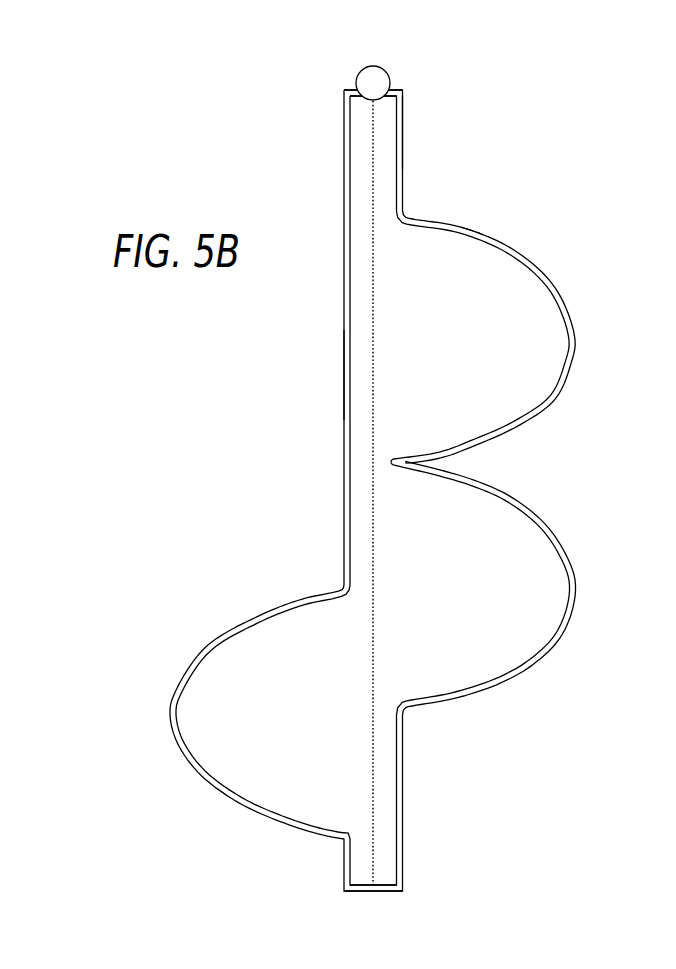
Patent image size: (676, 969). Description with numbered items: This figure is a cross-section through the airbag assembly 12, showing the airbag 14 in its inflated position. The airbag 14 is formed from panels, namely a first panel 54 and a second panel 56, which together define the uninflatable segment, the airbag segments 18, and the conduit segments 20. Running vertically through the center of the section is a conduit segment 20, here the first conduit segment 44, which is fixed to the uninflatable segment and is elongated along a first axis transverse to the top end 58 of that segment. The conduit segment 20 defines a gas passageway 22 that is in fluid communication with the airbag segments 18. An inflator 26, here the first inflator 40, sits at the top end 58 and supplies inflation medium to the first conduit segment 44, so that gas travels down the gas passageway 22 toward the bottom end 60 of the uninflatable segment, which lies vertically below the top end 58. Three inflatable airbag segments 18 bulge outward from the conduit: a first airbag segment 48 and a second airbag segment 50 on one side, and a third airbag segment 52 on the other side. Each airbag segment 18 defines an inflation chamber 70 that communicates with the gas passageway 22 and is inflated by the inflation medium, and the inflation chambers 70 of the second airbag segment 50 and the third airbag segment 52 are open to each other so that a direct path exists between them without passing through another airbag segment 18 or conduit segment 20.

The airbag assembly 12 is at (377, 462).
The airbag 14 is at (343, 188).
The airbag segment 18 is at (519, 334).
The conduit segment 20 is at (458, 132).
The gas passageway 22 is at (360, 326).
The inflator 26 is at (414, 62).
The first inflator 40 is at (378, 68).
The first conduit segment 44 is at (403, 125).
The first airbag segment 48 is at (543, 270).
The second airbag segment 50 is at (543, 521).
The third airbag segment 52 is at (225, 627).
The first panel 54 is at (343, 377).
The second panel 56 is at (470, 230).
The top end 58 is at (343, 99).
The bottom end 60 is at (343, 868).
The inflation chamber 70 is at (503, 355).